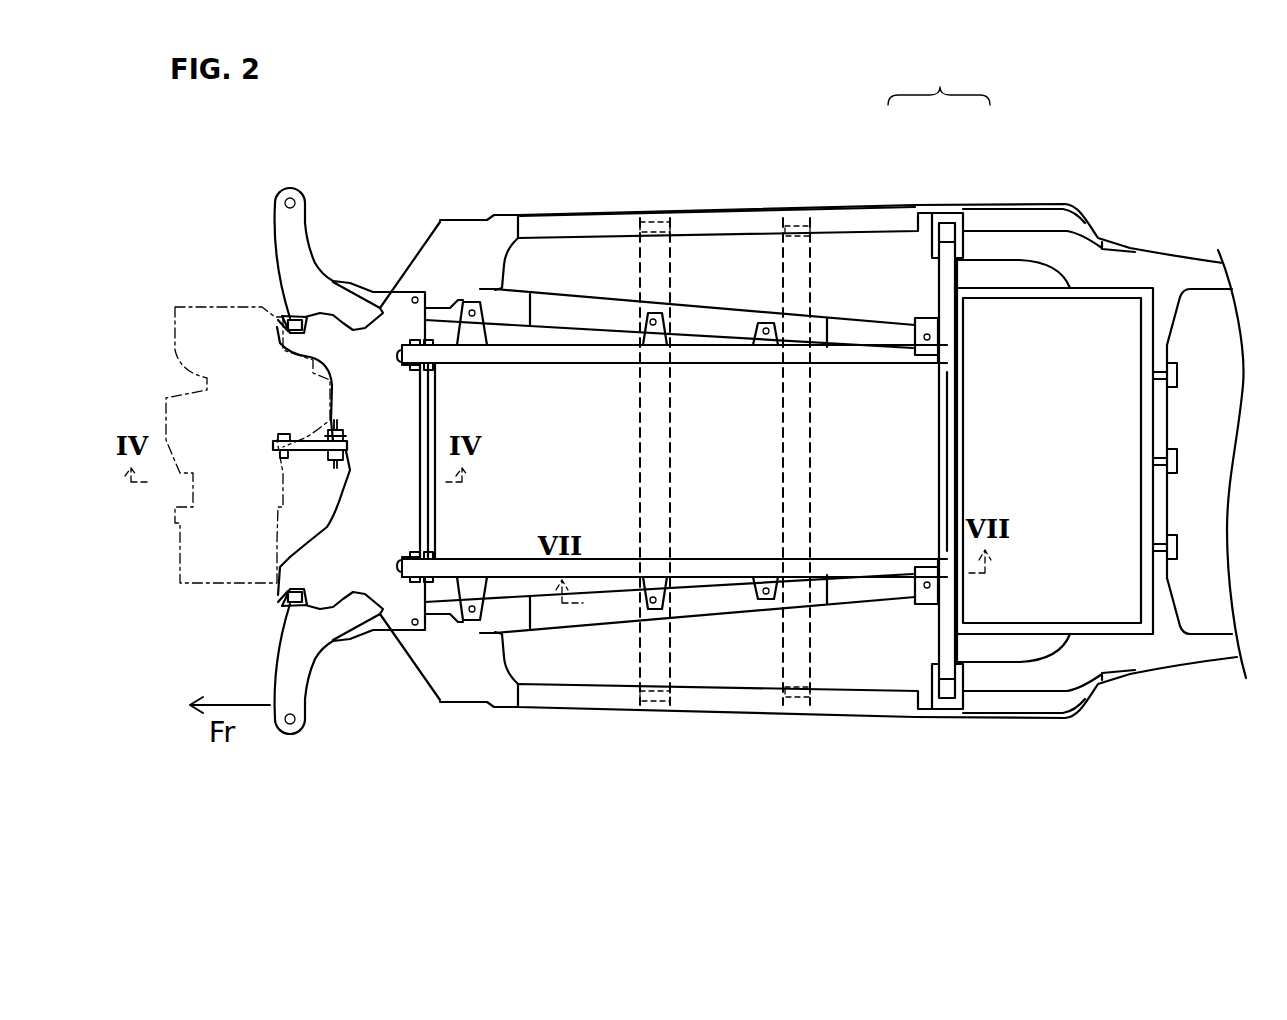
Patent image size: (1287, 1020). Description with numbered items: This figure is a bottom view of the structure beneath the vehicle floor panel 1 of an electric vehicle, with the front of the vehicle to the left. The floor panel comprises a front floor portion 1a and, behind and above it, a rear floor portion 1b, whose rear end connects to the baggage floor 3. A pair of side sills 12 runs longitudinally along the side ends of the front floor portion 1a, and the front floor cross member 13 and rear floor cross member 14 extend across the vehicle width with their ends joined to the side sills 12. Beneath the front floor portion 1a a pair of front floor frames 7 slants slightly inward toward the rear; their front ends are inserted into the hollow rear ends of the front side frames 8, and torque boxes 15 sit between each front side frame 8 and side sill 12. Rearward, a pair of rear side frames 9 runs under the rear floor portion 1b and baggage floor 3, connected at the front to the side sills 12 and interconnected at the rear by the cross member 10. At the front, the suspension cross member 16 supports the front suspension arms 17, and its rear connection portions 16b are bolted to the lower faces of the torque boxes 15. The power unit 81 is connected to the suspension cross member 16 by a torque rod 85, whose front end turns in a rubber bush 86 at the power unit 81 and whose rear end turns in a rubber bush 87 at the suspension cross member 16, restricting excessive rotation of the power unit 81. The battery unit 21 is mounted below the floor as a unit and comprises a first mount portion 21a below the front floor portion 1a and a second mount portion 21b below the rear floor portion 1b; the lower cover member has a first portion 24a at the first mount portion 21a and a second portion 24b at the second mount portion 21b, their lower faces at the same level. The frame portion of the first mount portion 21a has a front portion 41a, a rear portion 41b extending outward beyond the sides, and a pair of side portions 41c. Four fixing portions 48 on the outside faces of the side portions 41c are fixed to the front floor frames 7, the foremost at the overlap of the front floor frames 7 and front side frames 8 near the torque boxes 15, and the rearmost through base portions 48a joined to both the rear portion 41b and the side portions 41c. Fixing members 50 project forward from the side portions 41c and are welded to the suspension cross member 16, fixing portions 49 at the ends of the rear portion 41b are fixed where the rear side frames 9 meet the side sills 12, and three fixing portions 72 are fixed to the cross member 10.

The vehicle floor panel 1 is at (939, 79).
The front floor portion 1a is at (885, 259).
The rear floor portion 1b is at (997, 262).
The baggage floor 3 is at (1217, 301).
The front floor frame 7 is at (603, 308).
The front side frame 8 is at (512, 296).
The rear side frame 9 is at (1030, 237).
The cross member 10 is at (1167, 427).
The side sill 12 is at (725, 212).
The front floor cross member 13 is at (670, 462).
The rear floor cross member 14 is at (812, 462).
The torque box 15 is at (447, 212).
The suspension cross member 16 is at (330, 600).
The rear connection portion 16b is at (412, 290).
The front suspension arm 17 is at (302, 212).
The battery unit 21 is at (724, 393).
The first mount portion 21a is at (726, 540).
The second mount portion 21b is at (1089, 568).
The first portion 24a is at (853, 545).
The second portion 24b is at (1128, 588).
The front portion 41a is at (437, 388).
The rear portion 41b is at (950, 600).
The side portion 41c is at (566, 349).
The fixing portion 48 is at (472, 302).
The base portion 48a is at (912, 340).
The fixing portion 49 is at (958, 240).
The fixing member 50 is at (400, 352).
The fixing portion 72 is at (1178, 374).
The power unit 81 is at (215, 302).
The torque rod 85 is at (310, 452).
The rubber bush 86 is at (282, 436).
The rubber bush 87 is at (343, 440).